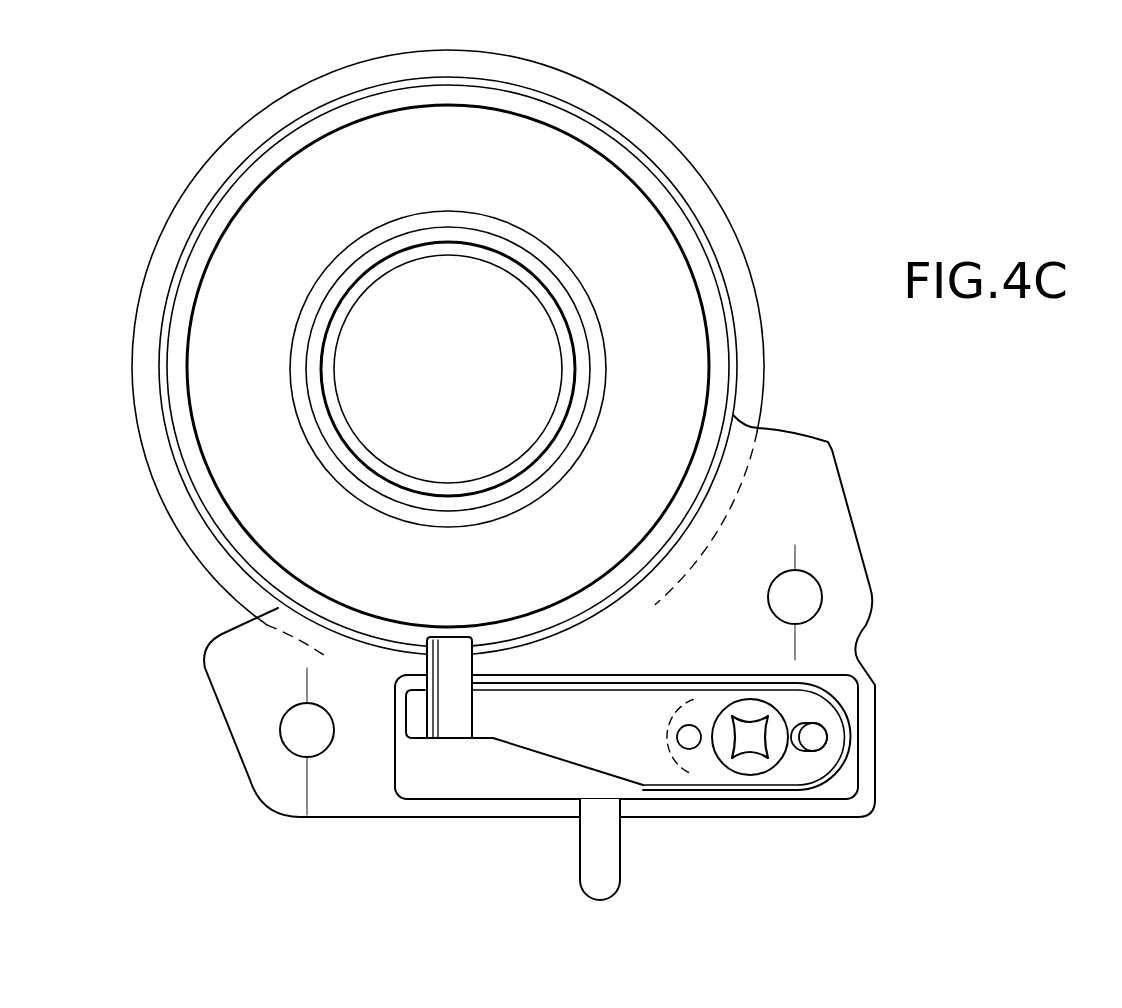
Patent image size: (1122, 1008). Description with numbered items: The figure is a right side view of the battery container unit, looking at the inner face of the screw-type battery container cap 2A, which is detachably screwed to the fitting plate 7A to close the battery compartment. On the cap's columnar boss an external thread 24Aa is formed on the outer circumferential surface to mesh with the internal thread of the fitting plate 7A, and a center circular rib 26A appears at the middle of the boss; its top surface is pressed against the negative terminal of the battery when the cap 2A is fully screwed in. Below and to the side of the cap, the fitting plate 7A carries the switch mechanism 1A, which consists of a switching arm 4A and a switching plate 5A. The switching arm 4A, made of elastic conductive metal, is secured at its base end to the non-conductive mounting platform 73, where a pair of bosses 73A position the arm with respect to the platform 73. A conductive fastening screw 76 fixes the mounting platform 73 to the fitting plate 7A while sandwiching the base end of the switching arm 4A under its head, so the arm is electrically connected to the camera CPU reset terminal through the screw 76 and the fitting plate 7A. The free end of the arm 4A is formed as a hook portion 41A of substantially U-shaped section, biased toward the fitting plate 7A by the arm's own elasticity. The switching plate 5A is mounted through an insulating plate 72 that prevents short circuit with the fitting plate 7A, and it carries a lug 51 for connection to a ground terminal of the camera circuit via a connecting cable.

The battery container cap 2A is at (683, 116).
The external thread 24Aa is at (693, 210).
The center circular rib 26A is at (592, 393).
The fitting plate 7A is at (842, 538).
The hook portion 41A is at (453, 655).
The fastening screw 76 is at (750, 706).
The bosses 73A is at (683, 738).
The mounting platform 73 is at (747, 790).
The insulating plate 72 is at (395, 767).
The switching plate 5A is at (465, 783).
The switching arm 4A is at (562, 743).
The switch mechanism 1A is at (552, 866).
The lug 51 is at (617, 857).